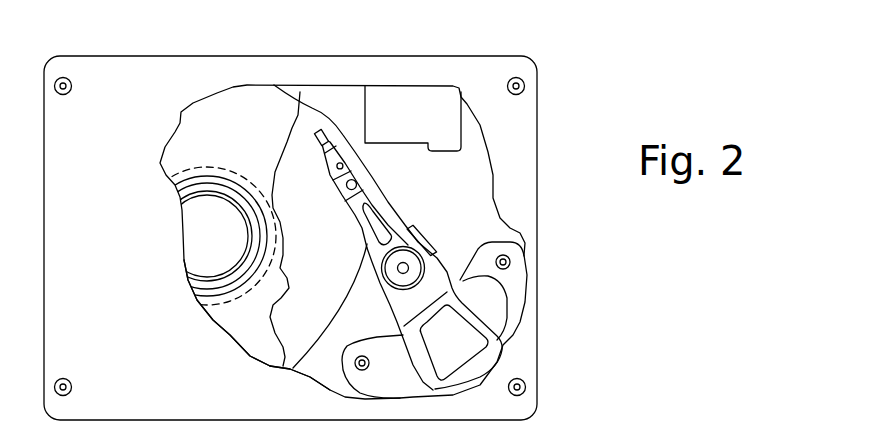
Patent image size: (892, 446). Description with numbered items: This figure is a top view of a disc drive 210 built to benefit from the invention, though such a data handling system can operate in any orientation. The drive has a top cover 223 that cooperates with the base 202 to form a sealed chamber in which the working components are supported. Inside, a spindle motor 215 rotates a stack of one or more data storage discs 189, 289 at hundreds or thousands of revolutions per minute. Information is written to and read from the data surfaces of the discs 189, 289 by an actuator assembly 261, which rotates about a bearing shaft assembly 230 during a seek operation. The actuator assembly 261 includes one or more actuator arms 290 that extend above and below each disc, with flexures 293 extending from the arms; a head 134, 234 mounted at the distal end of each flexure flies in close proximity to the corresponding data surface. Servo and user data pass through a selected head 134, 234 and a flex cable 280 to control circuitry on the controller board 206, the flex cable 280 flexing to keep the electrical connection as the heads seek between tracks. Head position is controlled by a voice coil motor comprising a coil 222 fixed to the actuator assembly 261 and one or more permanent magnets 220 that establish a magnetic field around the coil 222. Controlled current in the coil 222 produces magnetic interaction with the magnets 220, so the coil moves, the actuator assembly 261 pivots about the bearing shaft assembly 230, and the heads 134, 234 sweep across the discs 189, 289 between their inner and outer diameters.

The disc drive 210 is at (594, 55).
The top cover 223 is at (132, 97).
The base 202 is at (327, 104).
The controller board 206 is at (421, 109).
The spindle motor 215 is at (204, 234).
The head 134 is at (318, 130).
The head 234 is at (264, 132).
The flexure 293 is at (330, 154).
The flex cable 280 is at (402, 206).
The actuator arm 290 is at (362, 228).
The bearing shaft assembly 230 is at (366, 248).
The actuator assembly 261 is at (402, 268).
The data storage disc 289 is at (240, 318).
The data storage disc 189 is at (293, 368).
The permanent magnet 220 is at (487, 285).
The coil 222 is at (498, 355).